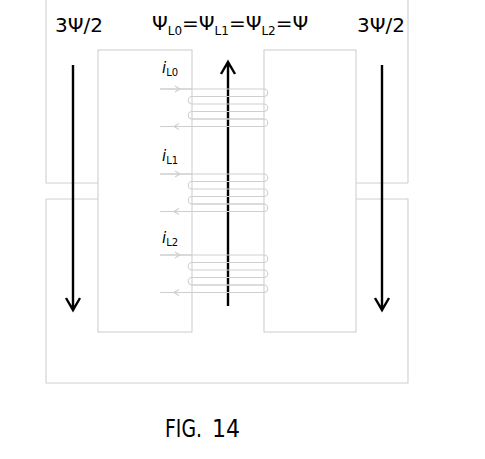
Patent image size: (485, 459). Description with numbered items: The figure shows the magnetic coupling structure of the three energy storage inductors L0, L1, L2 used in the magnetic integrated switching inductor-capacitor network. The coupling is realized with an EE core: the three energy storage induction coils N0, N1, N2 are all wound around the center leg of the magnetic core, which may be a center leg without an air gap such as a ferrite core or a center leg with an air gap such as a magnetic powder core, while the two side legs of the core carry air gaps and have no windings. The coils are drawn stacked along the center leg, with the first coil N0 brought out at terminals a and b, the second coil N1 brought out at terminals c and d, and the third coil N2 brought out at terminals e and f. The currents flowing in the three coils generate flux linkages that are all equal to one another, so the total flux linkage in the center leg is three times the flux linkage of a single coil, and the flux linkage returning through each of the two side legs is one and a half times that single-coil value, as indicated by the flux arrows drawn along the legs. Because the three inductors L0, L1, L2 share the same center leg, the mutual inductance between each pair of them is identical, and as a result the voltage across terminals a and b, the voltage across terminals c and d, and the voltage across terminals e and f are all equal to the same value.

The first energy storage inductor L0 is at (229, 108).
The second energy storage inductor L1 is at (229, 193).
The third energy storage inductor L2 is at (229, 274).
The first energy storage induction coil N0 is at (188, 107).
The second energy storage induction coil N1 is at (188, 192).
The third energy storage induction coil N2 is at (188, 273).
The terminal a of the first coil a is at (167, 87).
The terminal b of the first coil b is at (167, 125).
The terminal c of the second coil c is at (167, 173).
The terminal d of the second coil d is at (167, 211).
The terminal e of the third coil e is at (167, 254).
The terminal f of the third coil f is at (167, 292).